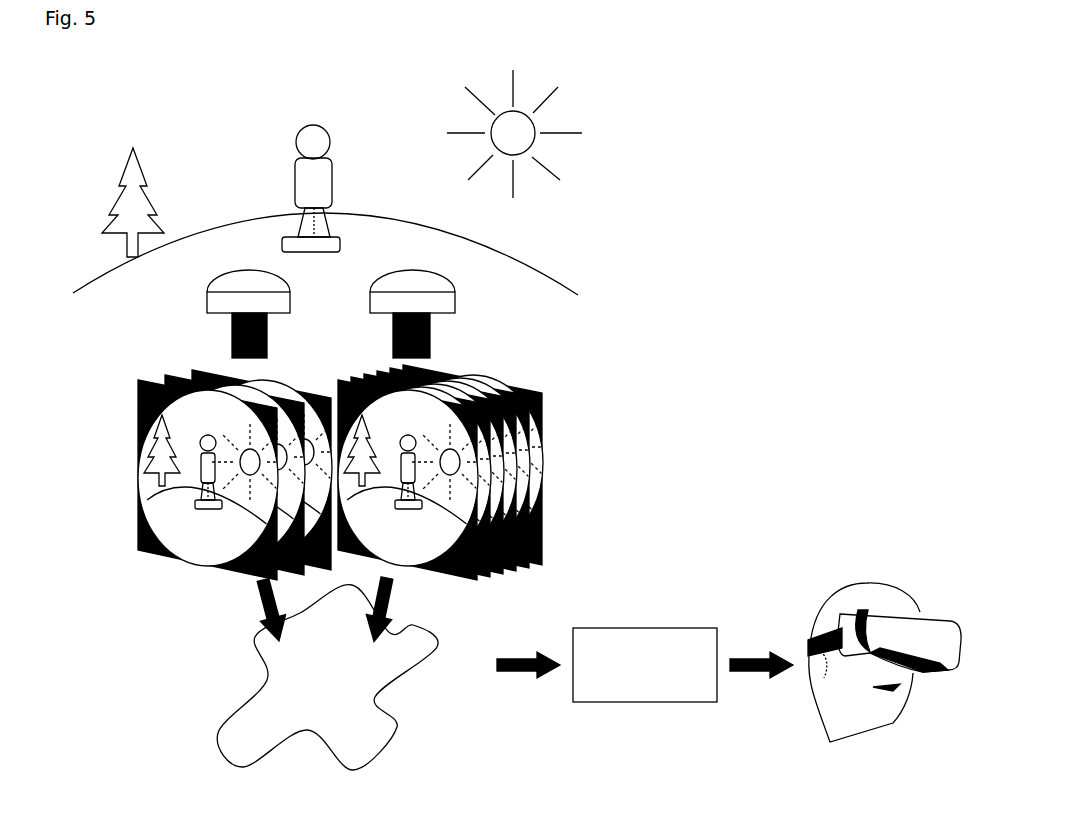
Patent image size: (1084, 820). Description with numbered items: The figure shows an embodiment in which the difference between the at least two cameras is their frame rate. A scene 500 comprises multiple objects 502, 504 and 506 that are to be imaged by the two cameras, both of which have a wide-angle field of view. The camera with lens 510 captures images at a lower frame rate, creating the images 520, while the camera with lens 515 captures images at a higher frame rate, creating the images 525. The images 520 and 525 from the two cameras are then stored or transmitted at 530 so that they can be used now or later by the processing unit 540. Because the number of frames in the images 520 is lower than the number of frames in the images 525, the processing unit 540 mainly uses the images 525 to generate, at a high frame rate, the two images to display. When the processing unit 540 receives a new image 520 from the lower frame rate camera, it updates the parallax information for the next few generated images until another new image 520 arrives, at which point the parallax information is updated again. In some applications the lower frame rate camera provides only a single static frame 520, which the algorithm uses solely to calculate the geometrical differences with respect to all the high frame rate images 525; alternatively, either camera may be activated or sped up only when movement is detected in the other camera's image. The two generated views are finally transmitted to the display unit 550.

The scene 500 is at (325, 187).
The object 502 is at (143, 202).
The object 504 is at (330, 188).
The object 506 is at (514, 134).
The lens 510 is at (250, 314).
The lens 515 is at (413, 314).
The images 520 is at (240, 475).
The images 525 is at (445, 472).
The storage or transmission 530 is at (327, 677).
The processing unit 540 is at (645, 665).
The display unit 550 is at (884, 662).